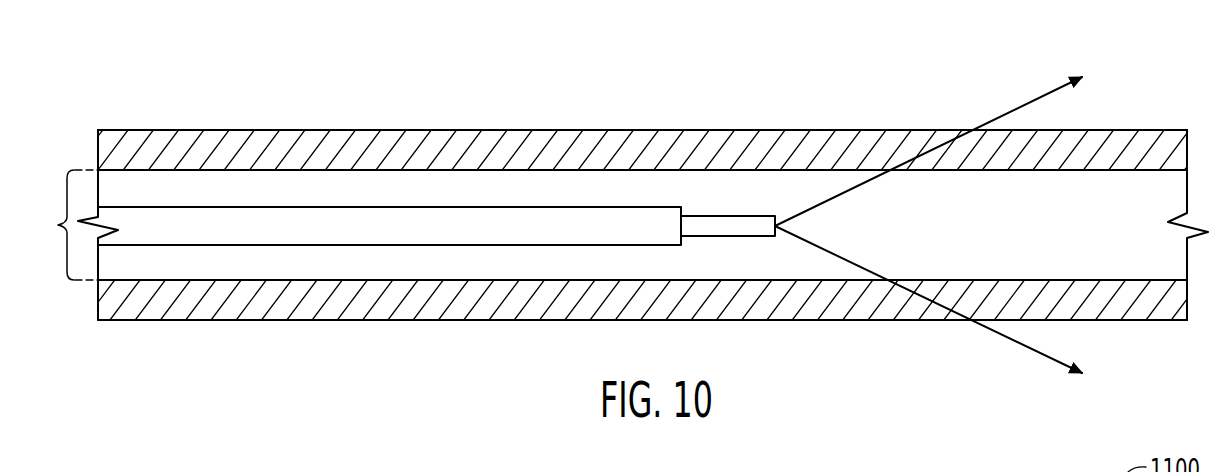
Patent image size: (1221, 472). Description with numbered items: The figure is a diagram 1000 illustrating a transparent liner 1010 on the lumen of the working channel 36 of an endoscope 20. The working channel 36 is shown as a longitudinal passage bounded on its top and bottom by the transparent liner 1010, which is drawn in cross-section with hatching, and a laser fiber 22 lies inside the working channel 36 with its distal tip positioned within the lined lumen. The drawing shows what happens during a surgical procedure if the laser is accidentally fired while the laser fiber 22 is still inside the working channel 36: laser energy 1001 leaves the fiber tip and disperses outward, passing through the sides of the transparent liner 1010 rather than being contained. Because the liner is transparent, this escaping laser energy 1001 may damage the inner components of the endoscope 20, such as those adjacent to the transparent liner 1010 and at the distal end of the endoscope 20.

The diagram 1000 is at (1114, 31).
The endoscope 20 is at (503, 112).
The laser fiber 22 is at (602, 206).
The working channel 36 is at (64, 225).
The transparent liner 1010 is at (1113, 130).
The laser energy 1001 is at (1035, 98).